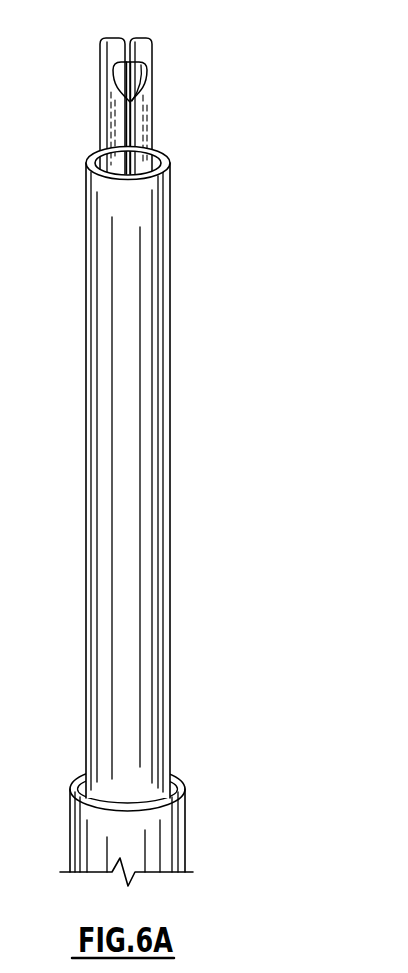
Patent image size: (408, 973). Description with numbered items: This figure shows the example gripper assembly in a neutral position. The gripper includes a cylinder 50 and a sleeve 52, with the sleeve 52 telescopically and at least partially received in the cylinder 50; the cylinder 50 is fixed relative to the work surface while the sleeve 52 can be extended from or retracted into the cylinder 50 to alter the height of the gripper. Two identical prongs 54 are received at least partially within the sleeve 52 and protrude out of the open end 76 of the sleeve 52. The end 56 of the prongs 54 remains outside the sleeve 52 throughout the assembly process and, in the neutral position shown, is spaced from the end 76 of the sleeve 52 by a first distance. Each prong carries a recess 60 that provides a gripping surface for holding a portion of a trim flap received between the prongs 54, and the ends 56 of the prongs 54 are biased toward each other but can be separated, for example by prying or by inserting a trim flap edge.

The cylinder 50 is at (163, 837).
The sleeve 52 is at (148, 207).
The prongs 54 is at (131, 103).
The end of the prongs 56 is at (148, 38).
The recesses 60 is at (117, 81).
The end of the sleeve 76 is at (88, 157).